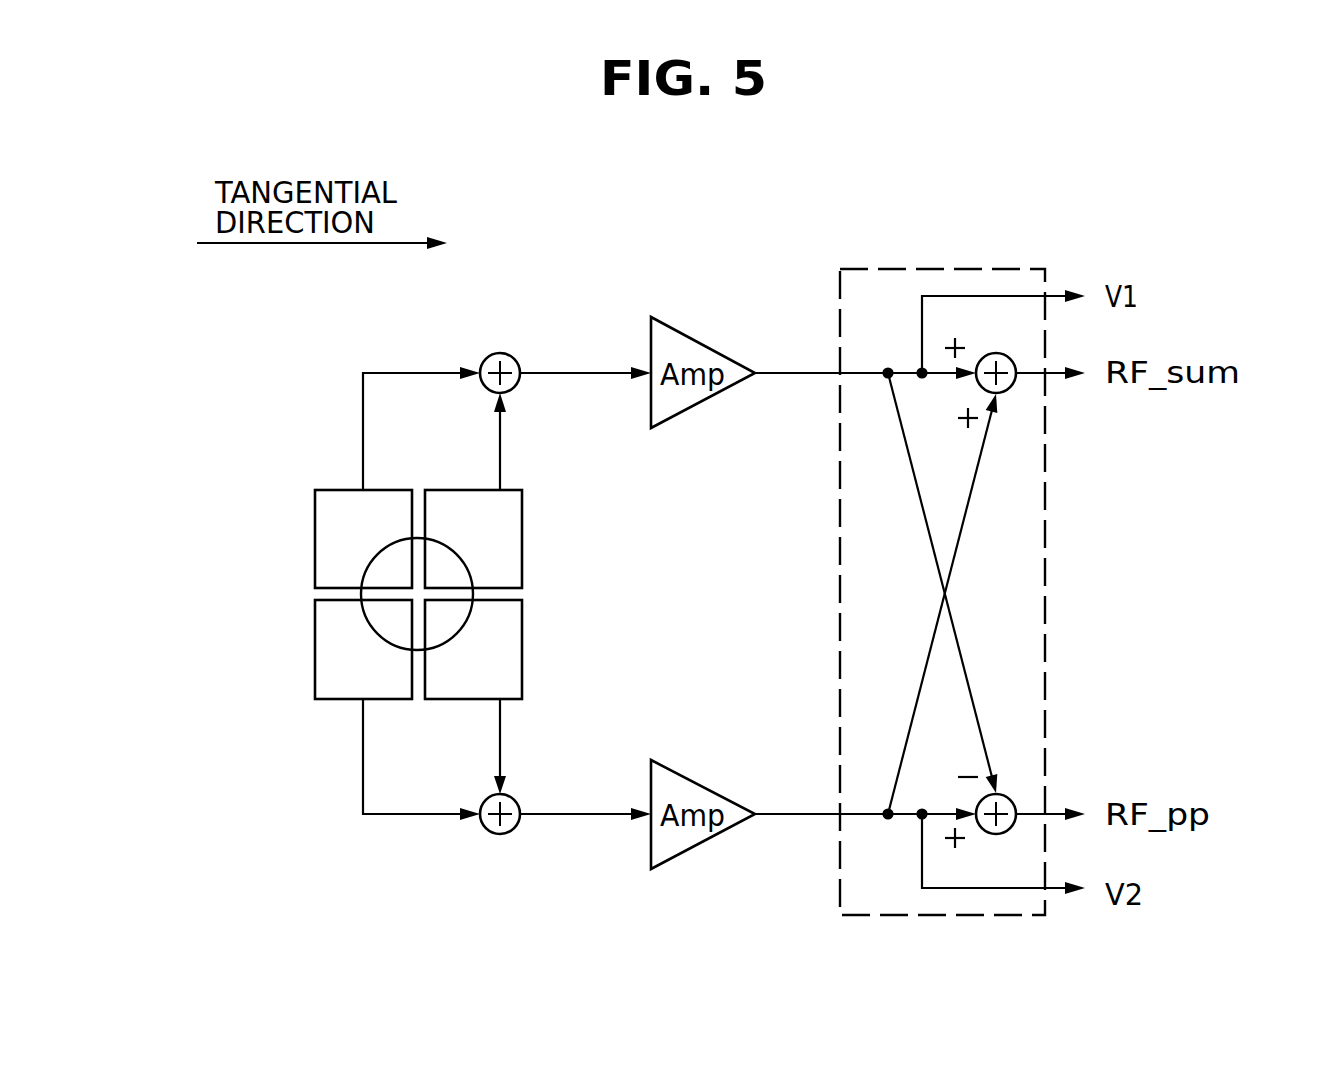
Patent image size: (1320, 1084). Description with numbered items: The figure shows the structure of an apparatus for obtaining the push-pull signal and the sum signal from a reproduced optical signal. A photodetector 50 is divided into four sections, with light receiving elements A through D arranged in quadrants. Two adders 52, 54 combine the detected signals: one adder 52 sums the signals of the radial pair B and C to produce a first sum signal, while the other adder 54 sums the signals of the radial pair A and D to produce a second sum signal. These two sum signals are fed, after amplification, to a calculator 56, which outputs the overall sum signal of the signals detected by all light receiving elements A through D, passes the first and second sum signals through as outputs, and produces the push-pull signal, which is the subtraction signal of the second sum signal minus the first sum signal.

The photodetector 50 is at (315, 656).
The adder 52 is at (500, 353).
The adder 54 is at (500, 834).
The calculator 56 is at (1045, 594).